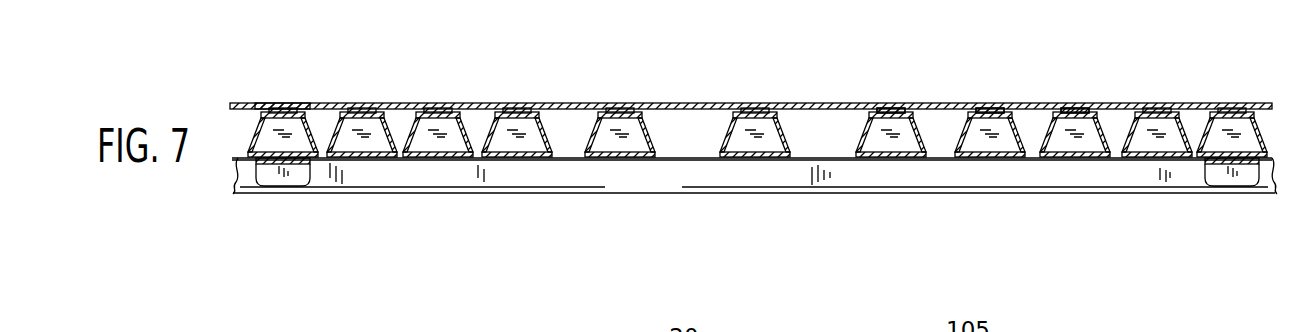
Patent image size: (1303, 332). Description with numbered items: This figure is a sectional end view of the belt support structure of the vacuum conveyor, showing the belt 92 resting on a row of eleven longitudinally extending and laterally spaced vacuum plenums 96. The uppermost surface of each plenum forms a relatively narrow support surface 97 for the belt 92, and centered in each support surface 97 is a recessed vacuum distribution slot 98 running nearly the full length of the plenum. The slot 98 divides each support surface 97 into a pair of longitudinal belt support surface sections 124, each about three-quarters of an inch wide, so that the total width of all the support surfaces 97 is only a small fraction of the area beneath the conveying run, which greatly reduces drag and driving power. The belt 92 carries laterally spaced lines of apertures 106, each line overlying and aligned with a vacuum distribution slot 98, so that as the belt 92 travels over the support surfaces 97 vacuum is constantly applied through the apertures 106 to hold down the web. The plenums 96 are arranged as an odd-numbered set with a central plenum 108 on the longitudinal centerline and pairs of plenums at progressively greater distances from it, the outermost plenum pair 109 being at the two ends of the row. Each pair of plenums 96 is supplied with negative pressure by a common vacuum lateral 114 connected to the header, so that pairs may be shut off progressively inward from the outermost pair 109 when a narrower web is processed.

The belt 92 is at (575, 100).
The vacuum plenums 96 is at (903, 147).
The support surface 97 is at (302, 102).
The vacuum distribution slot 98 is at (885, 108).
The apertures 106 is at (1073, 107).
The central plenum 108 is at (770, 133).
The outermost plenum pair 109 is at (297, 132).
The vacuum lateral 114 is at (520, 177).
The belt support surface sections 124 is at (607, 103).